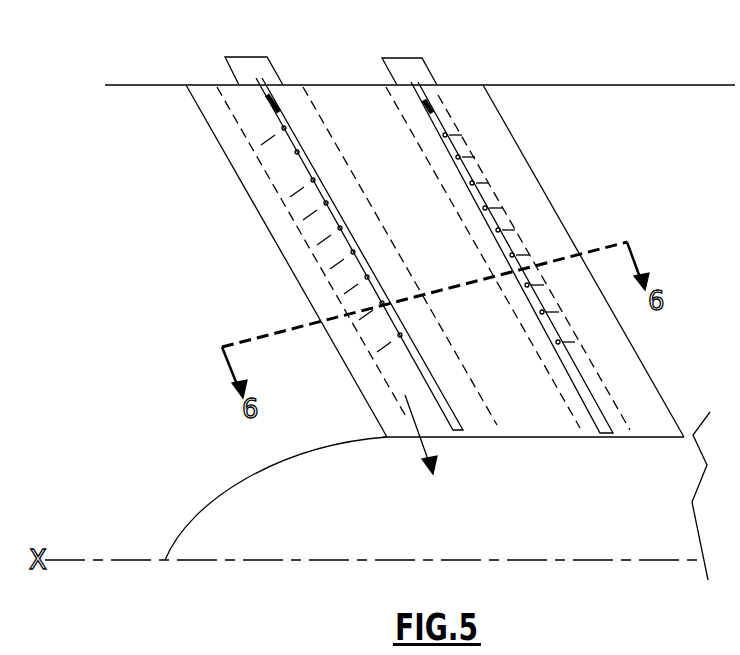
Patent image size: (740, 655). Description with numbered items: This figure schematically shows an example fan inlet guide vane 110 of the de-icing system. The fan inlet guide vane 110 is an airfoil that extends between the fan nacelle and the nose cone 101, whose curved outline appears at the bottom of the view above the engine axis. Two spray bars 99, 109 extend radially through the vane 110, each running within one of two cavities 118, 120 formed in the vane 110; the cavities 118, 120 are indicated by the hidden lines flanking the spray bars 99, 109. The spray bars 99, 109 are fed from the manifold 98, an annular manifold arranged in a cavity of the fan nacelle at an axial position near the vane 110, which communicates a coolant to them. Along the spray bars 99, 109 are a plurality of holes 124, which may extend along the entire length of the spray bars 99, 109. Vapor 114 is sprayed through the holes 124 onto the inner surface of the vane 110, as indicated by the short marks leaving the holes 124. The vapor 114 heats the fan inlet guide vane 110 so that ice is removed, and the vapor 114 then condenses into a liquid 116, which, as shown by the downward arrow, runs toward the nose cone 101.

The manifold 98 is at (243, 66).
The spray bar 99 is at (285, 118).
The nose cone 101 is at (250, 472).
The spray bar 109 is at (455, 130).
The fan inlet guide vane 110 is at (235, 167).
The vapor 114 is at (265, 88).
The liquid 116 is at (433, 447).
The cavity 118 is at (352, 138).
The cavity 120 is at (476, 150).
The holes 124 is at (298, 153).